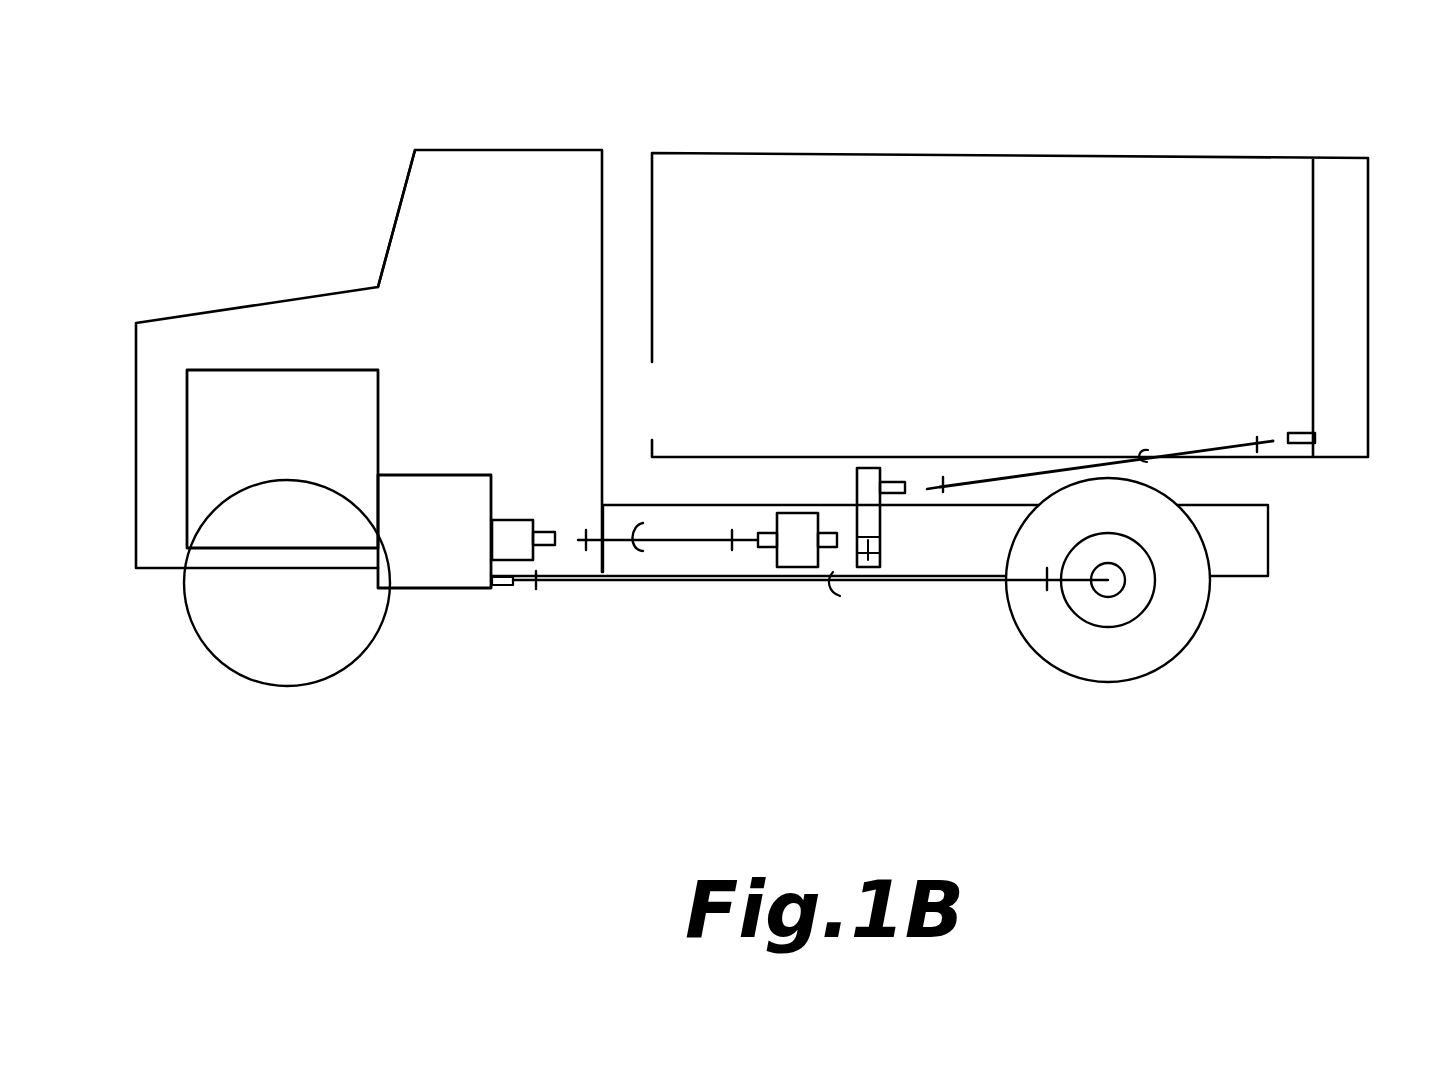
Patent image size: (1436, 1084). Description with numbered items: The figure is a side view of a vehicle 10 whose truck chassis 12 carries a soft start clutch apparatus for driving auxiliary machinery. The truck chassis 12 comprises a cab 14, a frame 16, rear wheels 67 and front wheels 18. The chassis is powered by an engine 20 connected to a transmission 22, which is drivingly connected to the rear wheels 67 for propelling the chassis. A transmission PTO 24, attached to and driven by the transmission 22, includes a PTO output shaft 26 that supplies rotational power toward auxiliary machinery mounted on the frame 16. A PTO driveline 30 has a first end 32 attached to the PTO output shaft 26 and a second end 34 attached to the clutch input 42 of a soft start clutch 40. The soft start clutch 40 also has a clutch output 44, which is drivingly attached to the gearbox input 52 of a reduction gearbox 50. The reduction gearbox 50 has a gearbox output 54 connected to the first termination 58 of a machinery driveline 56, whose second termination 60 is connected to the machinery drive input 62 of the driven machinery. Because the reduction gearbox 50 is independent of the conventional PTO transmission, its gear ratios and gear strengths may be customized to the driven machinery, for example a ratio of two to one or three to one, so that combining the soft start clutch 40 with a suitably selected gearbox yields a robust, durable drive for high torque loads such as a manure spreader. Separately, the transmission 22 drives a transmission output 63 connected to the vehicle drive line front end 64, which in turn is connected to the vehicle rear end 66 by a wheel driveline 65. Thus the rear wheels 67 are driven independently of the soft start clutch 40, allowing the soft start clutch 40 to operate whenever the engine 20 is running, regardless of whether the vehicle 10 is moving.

The vehicle 10 is at (912, 140).
The truck chassis 12 is at (497, 143).
The cab 14 is at (413, 257).
The frame 16 is at (1235, 565).
The front wheels 18 is at (303, 648).
The engine 20 is at (282, 459).
The transmission 22 is at (434, 531).
The transmission PTO 24 is at (512, 533).
The PTO output shaft 26 is at (552, 532).
The PTO driveline 30 is at (637, 522).
The first end 32 is at (586, 548).
The second end 34 is at (732, 545).
The soft start clutch 40 is at (793, 560).
The clutch input 42 is at (767, 535).
The clutch output 44 is at (827, 535).
The reduction gearbox 50 is at (868, 510).
The gearbox input 52 is at (865, 558).
The gearbox output 54 is at (900, 482).
The machinery driveline 56 is at (1143, 453).
The first termination 58 is at (948, 480).
The second termination 60 is at (1267, 447).
The machinery drive input 62 is at (1297, 433).
The transmission output 63 is at (503, 587).
The vehicle drive line front end 64 is at (538, 597).
The wheel driveline 65 is at (837, 593).
The vehicle rear end 66 is at (1037, 593).
The rear wheels 67 is at (1152, 660).